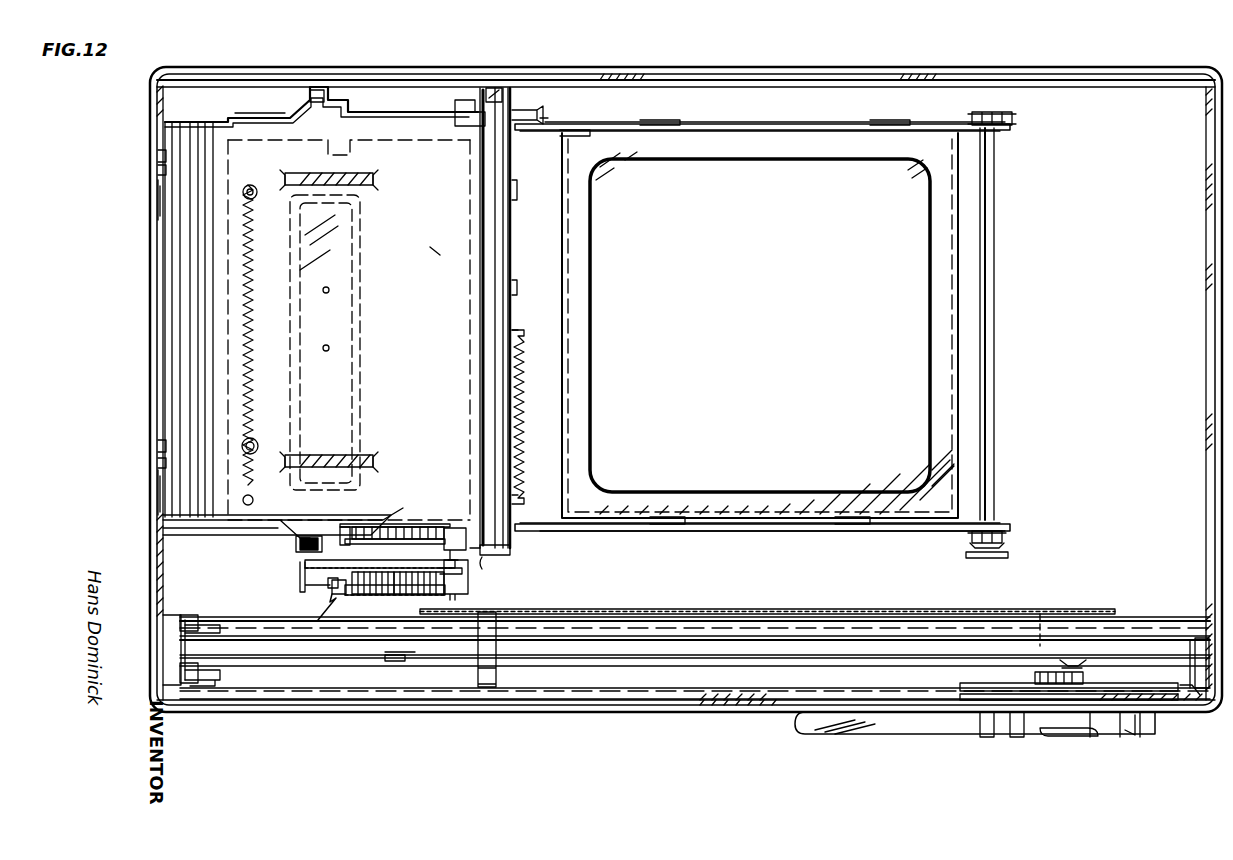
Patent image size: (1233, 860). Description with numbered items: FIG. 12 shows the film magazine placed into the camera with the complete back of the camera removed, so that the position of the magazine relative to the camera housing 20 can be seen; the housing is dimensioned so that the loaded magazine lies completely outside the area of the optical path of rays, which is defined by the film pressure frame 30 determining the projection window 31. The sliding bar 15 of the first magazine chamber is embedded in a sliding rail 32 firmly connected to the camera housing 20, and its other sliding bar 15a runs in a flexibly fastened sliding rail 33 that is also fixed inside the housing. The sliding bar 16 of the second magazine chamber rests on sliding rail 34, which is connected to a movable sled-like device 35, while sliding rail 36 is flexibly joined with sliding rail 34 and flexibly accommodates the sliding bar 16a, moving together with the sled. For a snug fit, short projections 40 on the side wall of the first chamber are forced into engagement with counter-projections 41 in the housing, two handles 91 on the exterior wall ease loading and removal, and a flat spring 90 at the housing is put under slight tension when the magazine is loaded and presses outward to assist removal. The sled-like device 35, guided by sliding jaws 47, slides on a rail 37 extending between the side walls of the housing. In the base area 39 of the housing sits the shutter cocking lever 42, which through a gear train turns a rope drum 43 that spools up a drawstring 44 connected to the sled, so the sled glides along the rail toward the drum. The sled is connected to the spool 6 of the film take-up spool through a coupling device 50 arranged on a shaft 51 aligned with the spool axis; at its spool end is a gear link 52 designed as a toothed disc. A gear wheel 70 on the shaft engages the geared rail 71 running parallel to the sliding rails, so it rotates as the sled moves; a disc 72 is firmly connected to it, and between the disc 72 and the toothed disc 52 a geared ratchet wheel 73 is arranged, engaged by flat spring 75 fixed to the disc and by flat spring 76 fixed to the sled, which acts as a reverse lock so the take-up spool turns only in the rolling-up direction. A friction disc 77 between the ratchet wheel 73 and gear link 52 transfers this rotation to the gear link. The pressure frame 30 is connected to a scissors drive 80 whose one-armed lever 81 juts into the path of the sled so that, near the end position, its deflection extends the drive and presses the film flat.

The spool 6 is at (380, 233).
The sliding bar 15 is at (296, 544).
The sliding bar 15a is at (318, 90).
The sliding bar 16 is at (506, 548).
The sliding bar 16a is at (510, 88).
The camera housing 20 is at (150, 312).
The film pressure frame 30 is at (578, 351).
The projection window 31 is at (916, 333).
The sliding rail 32 is at (202, 520).
The sliding rail 33 is at (257, 118).
The sliding rail 34 is at (483, 555).
The sled-like device 35 is at (308, 594).
The sliding rail 36 is at (486, 86).
The rail 37 is at (222, 656).
The base area 39 is at (690, 694).
The short projections 40 is at (164, 156).
The counter-projections 41 is at (158, 210).
The shutter cocking lever 42 is at (882, 736).
The rope drum 43 is at (1164, 706).
The drawstring 44 is at (590, 670).
The sliding jaws 47 is at (190, 621).
The coupling device 50 is at (318, 625).
The shaft 51 is at (390, 655).
The gear link 52 is at (398, 527).
The gear wheel 70 is at (348, 614).
The geared rail 71 is at (777, 608).
The disc 72 is at (429, 616).
The geared ratchet wheel 73 is at (450, 582).
The flat spring 75 is at (306, 578).
The flat spring 76 is at (446, 556).
The friction disc 77 is at (358, 528).
The scissors drive 80 is at (708, 122).
The one-armed lever 81 is at (1005, 554).
The flat spring 90 is at (334, 328).
The handles 91 is at (352, 174).